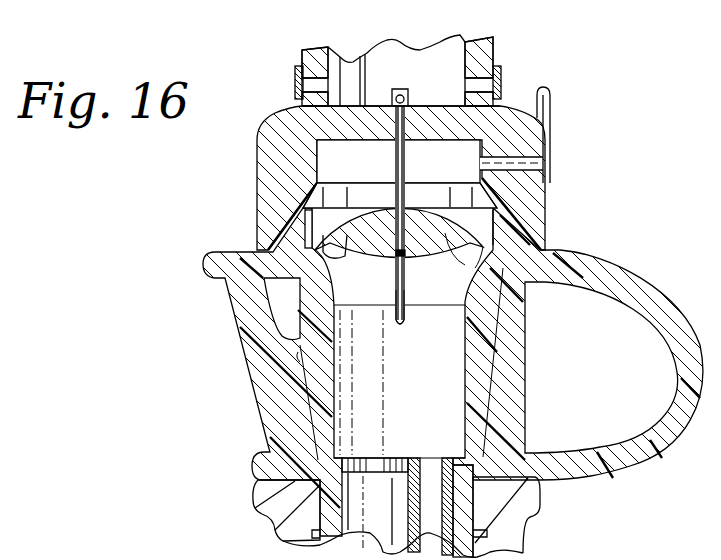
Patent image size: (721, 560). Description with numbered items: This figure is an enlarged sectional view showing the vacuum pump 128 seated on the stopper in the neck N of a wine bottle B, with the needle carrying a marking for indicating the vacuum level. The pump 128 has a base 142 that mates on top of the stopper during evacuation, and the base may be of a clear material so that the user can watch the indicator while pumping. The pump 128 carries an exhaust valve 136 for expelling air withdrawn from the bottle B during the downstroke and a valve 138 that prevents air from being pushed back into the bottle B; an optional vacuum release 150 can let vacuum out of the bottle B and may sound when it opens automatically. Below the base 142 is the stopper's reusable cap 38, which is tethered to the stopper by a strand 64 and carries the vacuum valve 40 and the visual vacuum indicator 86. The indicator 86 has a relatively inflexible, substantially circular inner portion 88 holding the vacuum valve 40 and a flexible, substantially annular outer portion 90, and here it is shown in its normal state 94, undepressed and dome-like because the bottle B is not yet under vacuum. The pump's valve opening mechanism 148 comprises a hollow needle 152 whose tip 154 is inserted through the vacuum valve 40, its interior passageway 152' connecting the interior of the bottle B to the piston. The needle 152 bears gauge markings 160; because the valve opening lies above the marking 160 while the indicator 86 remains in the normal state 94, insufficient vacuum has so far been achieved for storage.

The valve 138 is at (404, 92).
The vacuum pump 128 is at (510, 44).
The exhaust valve 136 is at (295, 84).
The vacuum release 150 is at (568, 108).
The base 142 is at (257, 165).
The valve opening mechanism 148 is at (408, 172).
The normal position or state 94 is at (478, 218).
The visual vacuum indicator 86 is at (331, 220).
The inner portion 88 is at (342, 240).
The vacuum valve 40 is at (393, 258).
The gauge marking 160 is at (410, 254).
The outer portion 90 is at (472, 258).
The hollow needle 152 is at (430, 308).
The interior passageway 152' is at (432, 340).
The tip 154 is at (402, 330).
The cap 38 is at (438, 427).
The strand 64 is at (642, 272).
The neck N is at (275, 526).
The wine bottle B is at (528, 534).